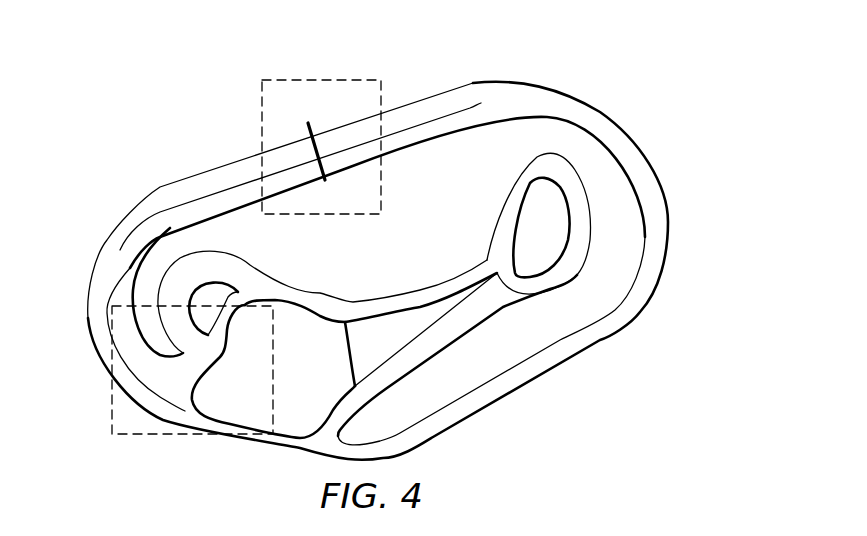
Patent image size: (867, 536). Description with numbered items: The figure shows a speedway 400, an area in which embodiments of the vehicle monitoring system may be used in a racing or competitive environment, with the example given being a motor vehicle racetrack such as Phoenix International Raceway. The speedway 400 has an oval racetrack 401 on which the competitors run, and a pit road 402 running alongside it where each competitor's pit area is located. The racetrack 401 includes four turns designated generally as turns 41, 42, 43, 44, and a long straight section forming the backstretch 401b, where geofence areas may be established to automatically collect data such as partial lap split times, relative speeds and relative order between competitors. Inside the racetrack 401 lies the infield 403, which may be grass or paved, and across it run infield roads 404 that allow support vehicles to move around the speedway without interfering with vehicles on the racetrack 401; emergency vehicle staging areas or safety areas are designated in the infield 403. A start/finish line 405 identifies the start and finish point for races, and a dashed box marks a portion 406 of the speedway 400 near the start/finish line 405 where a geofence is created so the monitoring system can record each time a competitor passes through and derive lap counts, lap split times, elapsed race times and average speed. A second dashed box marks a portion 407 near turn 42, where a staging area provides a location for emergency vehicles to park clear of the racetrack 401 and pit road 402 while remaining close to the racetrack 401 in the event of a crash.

The speedway 400 is at (158, 55).
The racetrack 401 is at (437, 104).
The backstretch 401b is at (515, 384).
The pit road 402 is at (442, 132).
The infield 403 is at (388, 261).
The infield roads 404 is at (263, 283).
The start/finish line 405 is at (313, 123).
The portion of speedway near start/finish line 406 is at (321, 113).
The portion of speedway near turn 2 407 is at (105, 413).
The turn 41 is at (88, 306).
The turn 42 is at (160, 410).
The turn 43 is at (666, 224).
The turn 44 is at (536, 88).